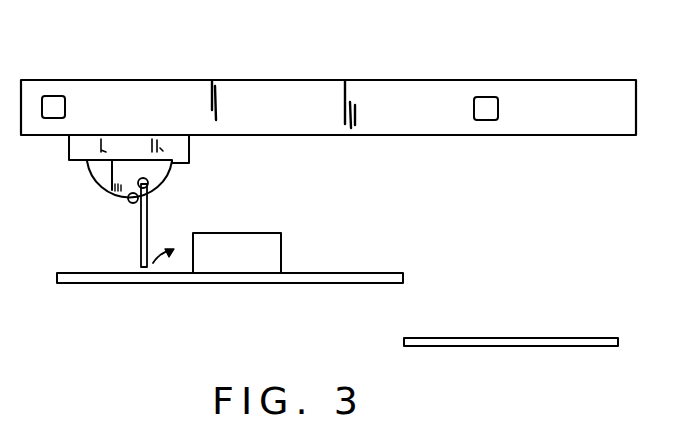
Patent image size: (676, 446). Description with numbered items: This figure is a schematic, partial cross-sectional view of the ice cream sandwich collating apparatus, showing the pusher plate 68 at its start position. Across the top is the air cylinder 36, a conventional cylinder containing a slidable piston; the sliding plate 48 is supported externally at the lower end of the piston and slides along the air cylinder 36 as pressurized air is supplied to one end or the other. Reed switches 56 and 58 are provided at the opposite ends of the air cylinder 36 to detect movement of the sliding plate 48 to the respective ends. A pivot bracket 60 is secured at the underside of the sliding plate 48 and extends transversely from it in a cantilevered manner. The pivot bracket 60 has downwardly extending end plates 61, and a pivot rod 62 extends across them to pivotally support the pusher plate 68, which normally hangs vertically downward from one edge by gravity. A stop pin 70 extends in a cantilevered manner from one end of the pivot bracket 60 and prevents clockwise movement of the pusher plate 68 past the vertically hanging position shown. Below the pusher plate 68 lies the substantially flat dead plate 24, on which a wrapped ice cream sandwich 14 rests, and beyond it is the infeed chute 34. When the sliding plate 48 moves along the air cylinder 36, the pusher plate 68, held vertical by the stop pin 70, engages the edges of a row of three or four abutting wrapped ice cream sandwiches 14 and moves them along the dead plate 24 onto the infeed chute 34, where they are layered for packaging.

The wrapped ice cream sandwich 14 is at (222, 243).
The dead plate 24 is at (72, 270).
The infeed chute 34 is at (530, 338).
The air cylinder 36 is at (383, 92).
The sliding plate 48 is at (84, 153).
The reed switch 56 is at (50, 104).
The reed switch 58 is at (484, 100).
The pivot bracket 60 is at (173, 173).
The end plate 61 is at (105, 188).
The pivot rod 62 is at (148, 182).
The pusher plate 68 is at (148, 226).
The stop pin 70 is at (130, 203).